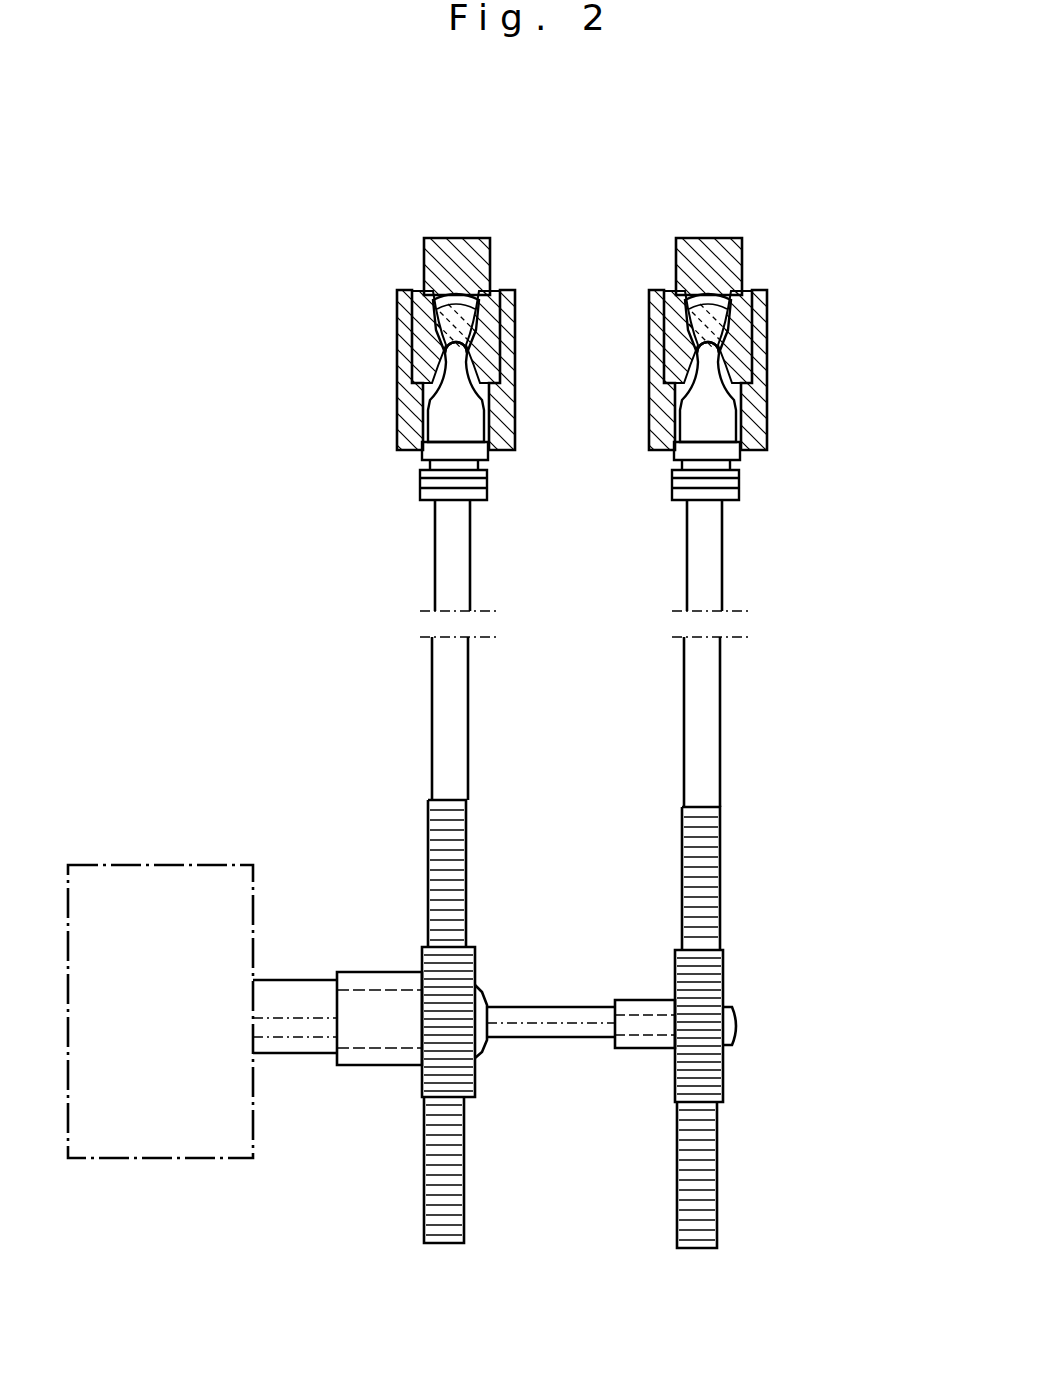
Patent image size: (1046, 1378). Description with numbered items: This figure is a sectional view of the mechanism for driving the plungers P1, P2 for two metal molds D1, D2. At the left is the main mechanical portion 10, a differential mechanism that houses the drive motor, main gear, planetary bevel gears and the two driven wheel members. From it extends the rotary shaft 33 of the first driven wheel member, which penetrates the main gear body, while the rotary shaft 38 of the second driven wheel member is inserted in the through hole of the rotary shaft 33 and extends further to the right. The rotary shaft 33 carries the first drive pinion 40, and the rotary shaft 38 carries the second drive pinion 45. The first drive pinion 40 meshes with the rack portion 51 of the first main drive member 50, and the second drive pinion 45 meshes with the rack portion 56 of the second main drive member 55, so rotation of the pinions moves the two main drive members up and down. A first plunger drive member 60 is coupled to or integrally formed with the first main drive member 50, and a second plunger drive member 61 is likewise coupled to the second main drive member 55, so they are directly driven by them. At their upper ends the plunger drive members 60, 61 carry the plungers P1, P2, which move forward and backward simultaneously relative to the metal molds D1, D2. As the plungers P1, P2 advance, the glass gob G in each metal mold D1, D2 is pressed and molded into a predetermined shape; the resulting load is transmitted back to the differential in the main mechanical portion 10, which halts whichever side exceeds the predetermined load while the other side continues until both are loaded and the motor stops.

The main mechanical portion 10 is at (178, 1030).
The rotary shaft 33 is at (308, 982).
The rotary shaft 38 is at (570, 1040).
The first drive pinion 40 is at (455, 977).
The second drive pinion 45 is at (668, 960).
The first main drive member 50 is at (455, 777).
The rack portion 51 is at (460, 855).
The second main drive member 55 is at (693, 762).
The rack portion 56 is at (688, 863).
The first plunger drive member 60 is at (438, 550).
The second plunger drive member 61 is at (722, 556).
The metal mold D1 is at (402, 288).
The metal mold D2 is at (653, 288).
The plunger P1 is at (440, 432).
The plunger P2 is at (722, 432).
The glass material (gob) G is at (462, 325).